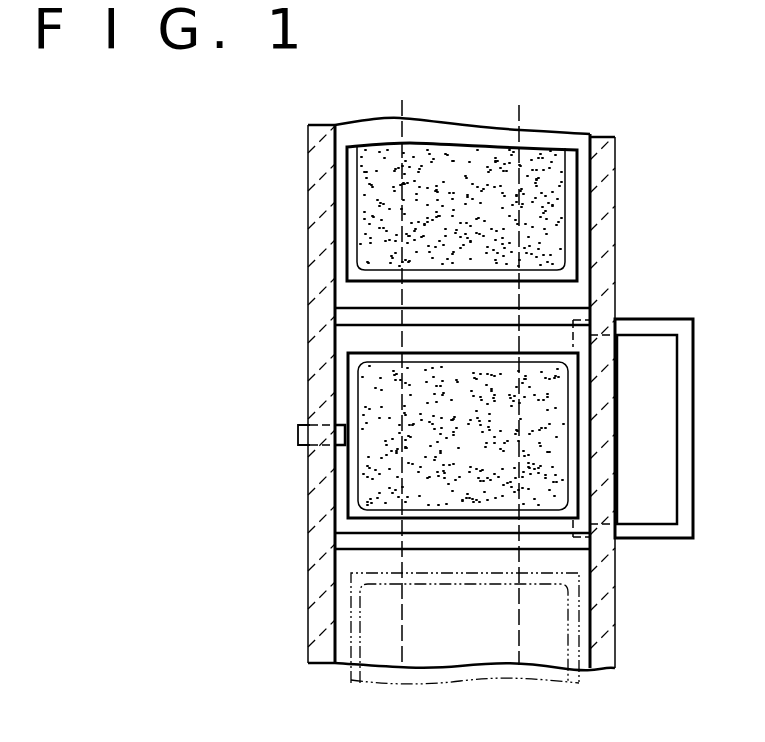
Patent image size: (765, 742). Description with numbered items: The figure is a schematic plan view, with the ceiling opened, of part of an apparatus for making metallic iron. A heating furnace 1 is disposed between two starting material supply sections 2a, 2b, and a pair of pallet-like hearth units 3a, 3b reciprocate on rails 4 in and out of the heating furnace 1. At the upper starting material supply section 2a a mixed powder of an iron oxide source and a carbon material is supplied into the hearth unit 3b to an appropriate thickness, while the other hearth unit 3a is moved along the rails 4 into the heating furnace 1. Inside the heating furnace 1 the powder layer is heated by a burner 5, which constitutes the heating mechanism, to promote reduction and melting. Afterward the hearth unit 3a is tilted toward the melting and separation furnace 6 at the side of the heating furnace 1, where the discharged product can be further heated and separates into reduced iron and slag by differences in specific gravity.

The heating furnace 1 is at (345, 341).
The starting material supply section 2a is at (330, 268).
The starting material supply section 2b is at (345, 604).
The hearth unit 3a is at (352, 476).
The hearth unit 3b is at (577, 228).
The rails 4 is at (520, 110).
The burner 5 is at (300, 432).
The melting and separation furnace 6 is at (694, 427).